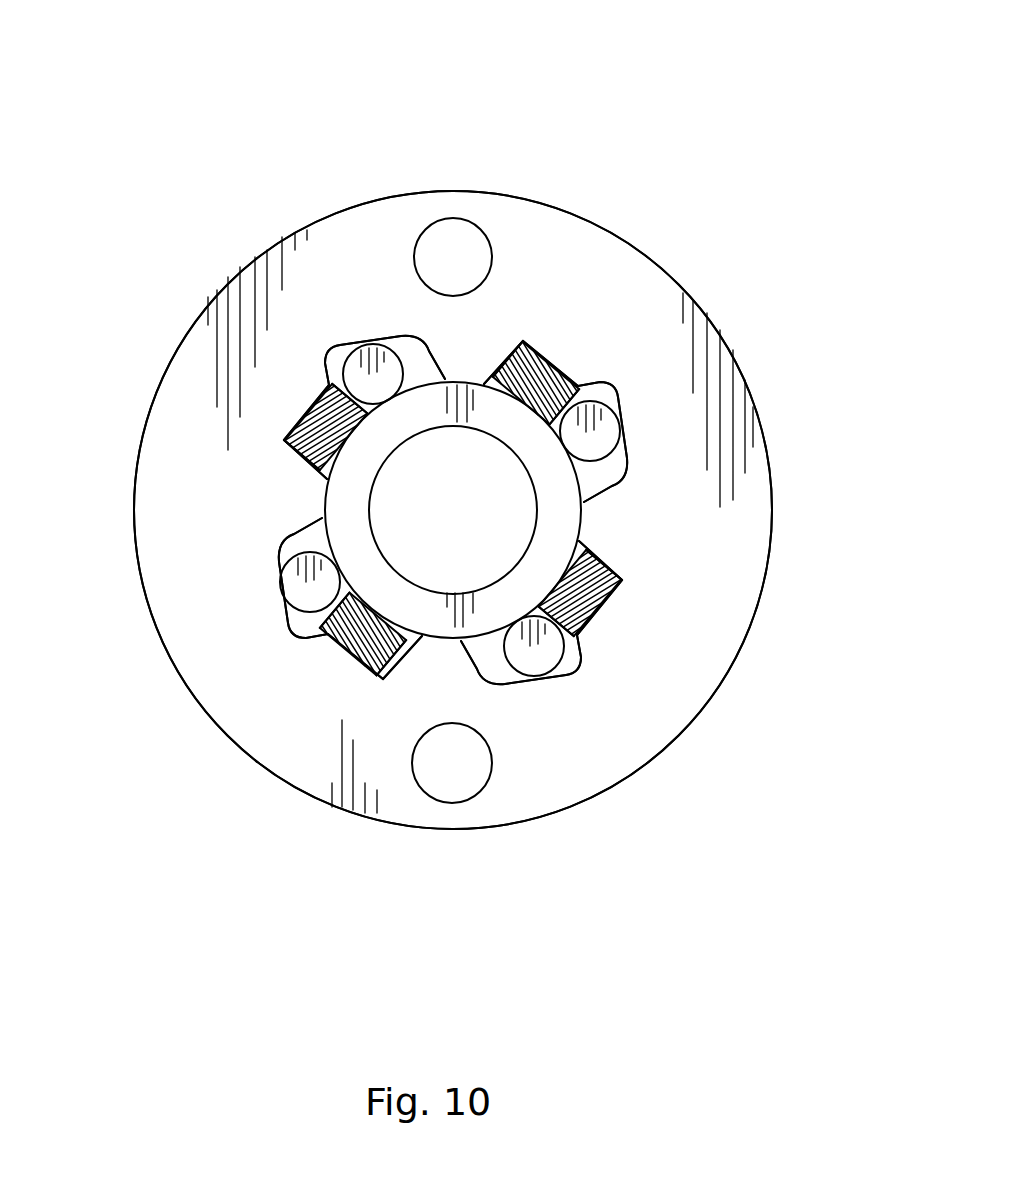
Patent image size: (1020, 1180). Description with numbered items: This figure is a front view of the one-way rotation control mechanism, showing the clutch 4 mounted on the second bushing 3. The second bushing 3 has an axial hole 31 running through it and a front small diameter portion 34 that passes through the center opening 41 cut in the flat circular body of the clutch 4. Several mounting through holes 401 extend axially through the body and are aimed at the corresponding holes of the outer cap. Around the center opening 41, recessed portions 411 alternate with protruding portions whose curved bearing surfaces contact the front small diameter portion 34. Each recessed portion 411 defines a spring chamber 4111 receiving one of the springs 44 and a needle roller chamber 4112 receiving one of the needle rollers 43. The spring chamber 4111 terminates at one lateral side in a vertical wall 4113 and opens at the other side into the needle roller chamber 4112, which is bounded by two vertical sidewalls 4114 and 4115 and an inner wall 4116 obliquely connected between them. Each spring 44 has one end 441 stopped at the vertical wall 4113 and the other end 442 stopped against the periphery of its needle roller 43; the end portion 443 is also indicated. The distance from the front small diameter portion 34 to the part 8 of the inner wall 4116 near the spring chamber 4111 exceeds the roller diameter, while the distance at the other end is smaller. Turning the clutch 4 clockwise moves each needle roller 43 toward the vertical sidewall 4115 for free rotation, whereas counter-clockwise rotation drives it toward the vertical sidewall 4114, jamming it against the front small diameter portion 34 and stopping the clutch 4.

The second bushing 3 is at (332, 503).
The axial hole 31 is at (368, 517).
The front small diameter portion 34 is at (327, 483).
The clutch 4 is at (366, 172).
The mounting through holes 401 is at (458, 250).
The center opening 41 is at (421, 378).
The recessed portions 411 is at (332, 357).
The spring chamber 4111 is at (487, 385).
The needle roller chamber 4112 is at (622, 405).
The vertical wall 4113 is at (504, 360).
The vertical sidewall 4114 is at (608, 386).
The vertical sidewall 4115 is at (580, 498).
The inner wall 4116 is at (607, 440).
The needle rollers 43 is at (363, 350).
The springs 44 is at (580, 380).
The end of spring 441 is at (560, 368).
The other end of spring 442 is at (320, 637).
The spring second end 443 is at (588, 390).
The part of inner wall 8 is at (330, 355).